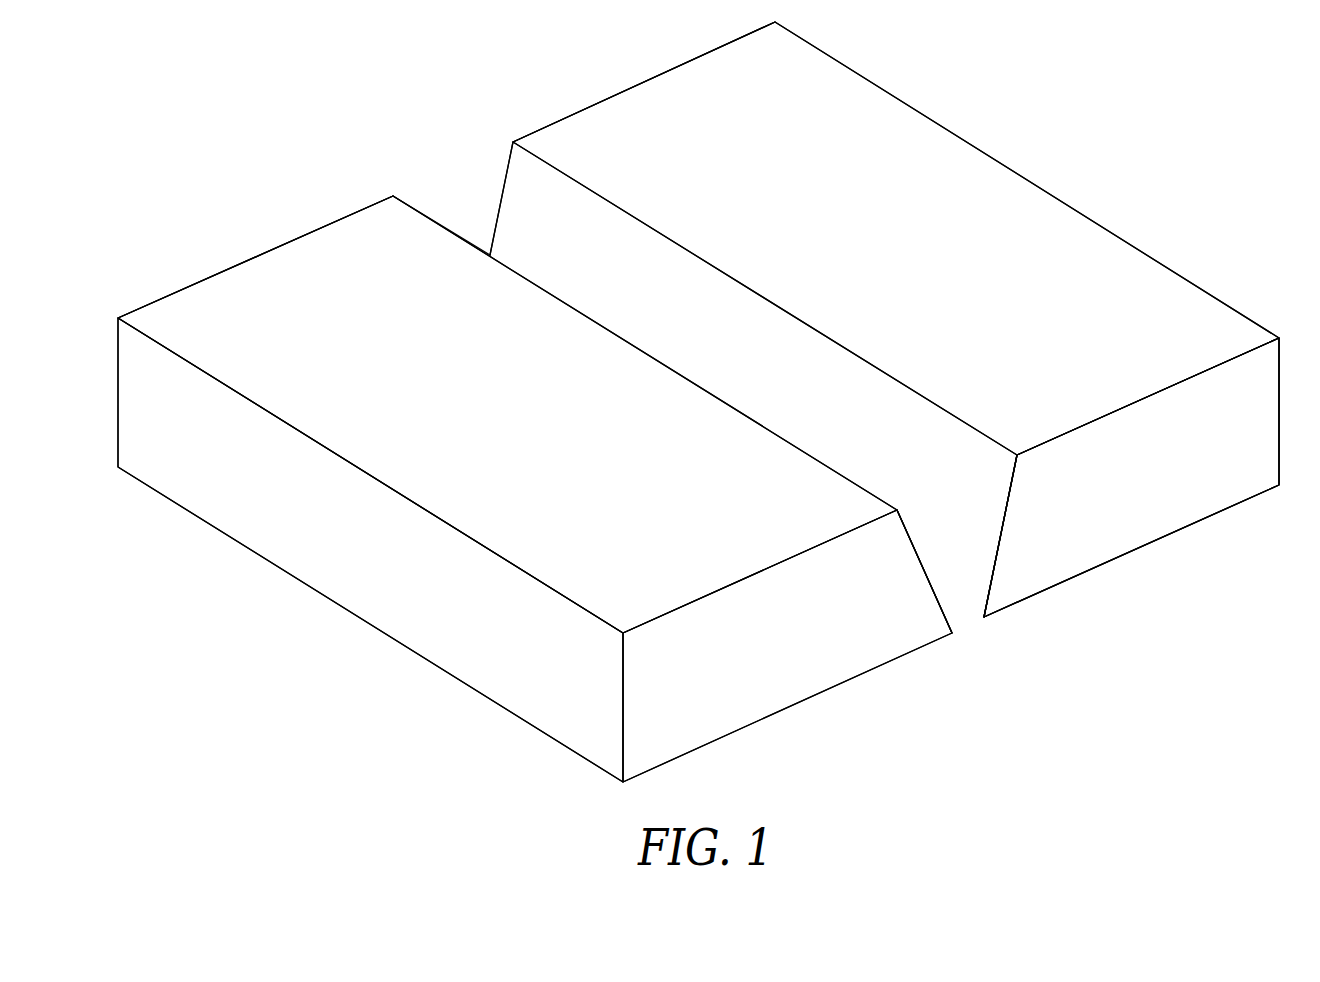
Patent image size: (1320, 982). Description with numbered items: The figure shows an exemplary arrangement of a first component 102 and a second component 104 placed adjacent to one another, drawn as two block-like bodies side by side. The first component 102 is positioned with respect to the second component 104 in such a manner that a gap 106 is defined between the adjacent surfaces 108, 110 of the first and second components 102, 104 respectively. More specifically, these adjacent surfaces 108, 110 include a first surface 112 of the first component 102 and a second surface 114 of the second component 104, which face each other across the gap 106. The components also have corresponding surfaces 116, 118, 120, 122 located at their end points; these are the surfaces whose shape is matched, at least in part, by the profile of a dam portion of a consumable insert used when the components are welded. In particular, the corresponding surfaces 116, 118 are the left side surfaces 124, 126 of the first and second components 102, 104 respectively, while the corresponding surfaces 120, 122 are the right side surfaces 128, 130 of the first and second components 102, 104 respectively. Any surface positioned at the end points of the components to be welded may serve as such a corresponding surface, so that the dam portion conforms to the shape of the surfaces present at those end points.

The first component 102 is at (523, 445).
The second component 104 is at (919, 252).
The gap 106 is at (957, 613).
The adjacent surface 108 is at (413, 208).
The adjacent surface 110 is at (498, 206).
The first surface 112 is at (910, 538).
The second surface 114 is at (970, 567).
The corresponding surface 116 is at (243, 263).
The corresponding surface 118 is at (623, 92).
The corresponding surface 120 is at (745, 675).
The corresponding surface 122 is at (1200, 477).
The left side surface 124 is at (312, 232).
The left side surface 126 is at (567, 115).
The right side surface 128 is at (842, 645).
The right side surface 130 is at (1142, 516).